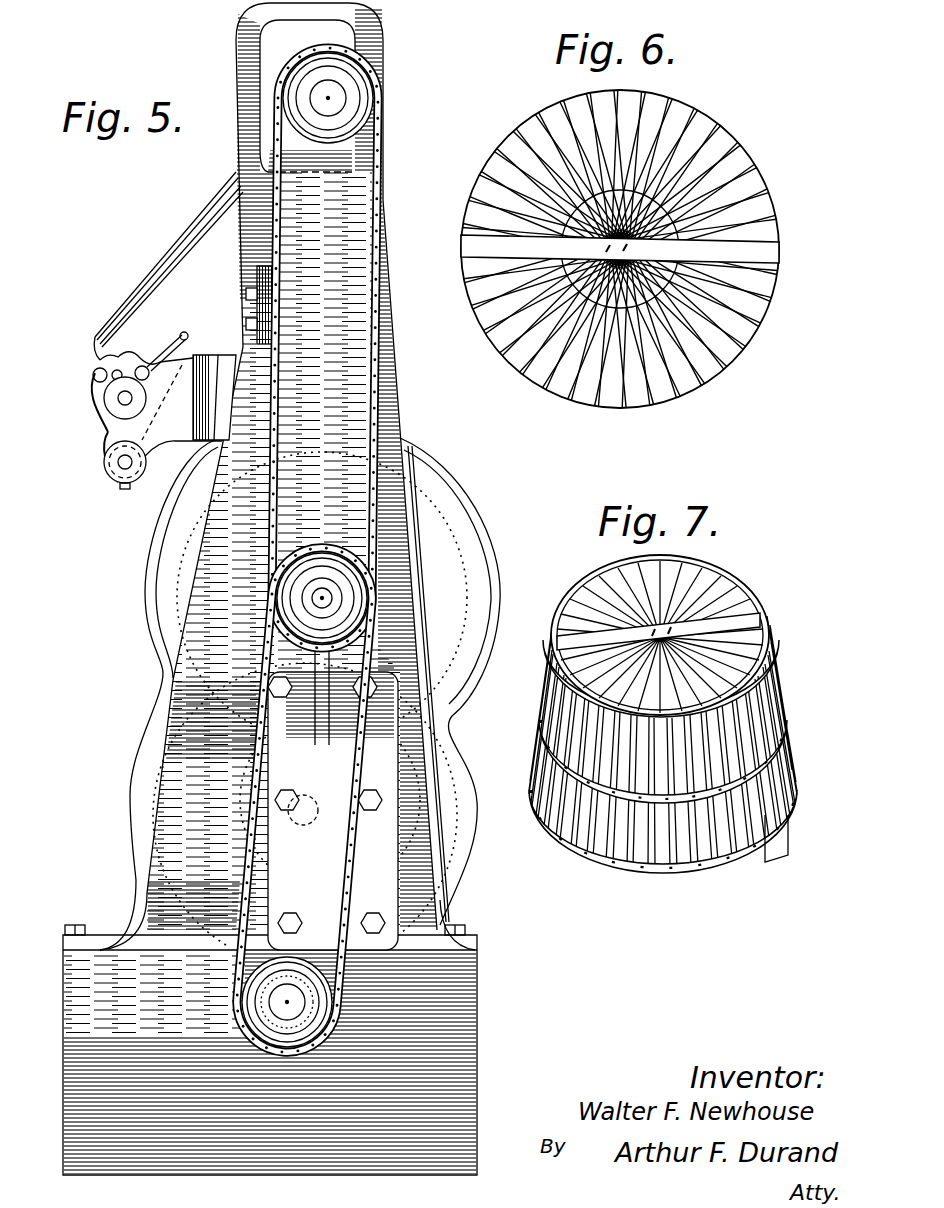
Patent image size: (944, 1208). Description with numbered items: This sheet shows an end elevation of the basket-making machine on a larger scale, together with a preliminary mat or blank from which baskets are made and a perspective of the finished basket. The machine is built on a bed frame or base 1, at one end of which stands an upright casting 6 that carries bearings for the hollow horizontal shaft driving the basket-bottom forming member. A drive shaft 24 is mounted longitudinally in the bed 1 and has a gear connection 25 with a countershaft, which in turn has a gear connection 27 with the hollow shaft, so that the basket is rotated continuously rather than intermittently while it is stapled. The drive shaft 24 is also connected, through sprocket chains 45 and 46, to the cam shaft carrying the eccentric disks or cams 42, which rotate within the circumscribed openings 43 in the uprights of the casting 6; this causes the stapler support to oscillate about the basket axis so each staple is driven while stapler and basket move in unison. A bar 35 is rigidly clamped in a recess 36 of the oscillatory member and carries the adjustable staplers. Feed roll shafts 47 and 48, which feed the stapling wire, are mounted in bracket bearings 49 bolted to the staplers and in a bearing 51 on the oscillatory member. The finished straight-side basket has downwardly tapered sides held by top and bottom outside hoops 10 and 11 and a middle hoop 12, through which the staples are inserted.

In FIG. 5, the bed frame or base 1 is at (270, 1034).
In FIG. 5, the upright casting 6 is at (418, 811).
In FIG. 5, the drive shaft 24 is at (272, 1002).
In FIG. 5, the gear connection 25 is at (152, 826).
In FIG. 5, the gear connection 27 is at (205, 666).
In FIG. 5, the bar 35 is at (258, 305).
In FIG. 5, the recess 36 is at (268, 293).
In FIG. 5, the eccentric disks or cams 42 is at (286, 90).
In FIG. 5, the circumscribed openings 43 is at (335, 32).
In FIG. 5, the sprocket chain 45 is at (347, 890).
In FIG. 5, the sprocket chain 46 is at (374, 368).
In FIG. 5, the upper feed roll shaft 47 is at (123, 398).
In FIG. 5, the feed roll shaft 48 is at (123, 462).
In FIG. 5, the bracket bearings 49 is at (223, 362).
In FIG. 5, the bearing 51 is at (321, 606).
In FIG. 7, the outside hoop 10 is at (575, 847).
In FIG. 7, the outside hoop 11 is at (759, 608).
In FIG. 7, the middle hoop 12 is at (784, 712).